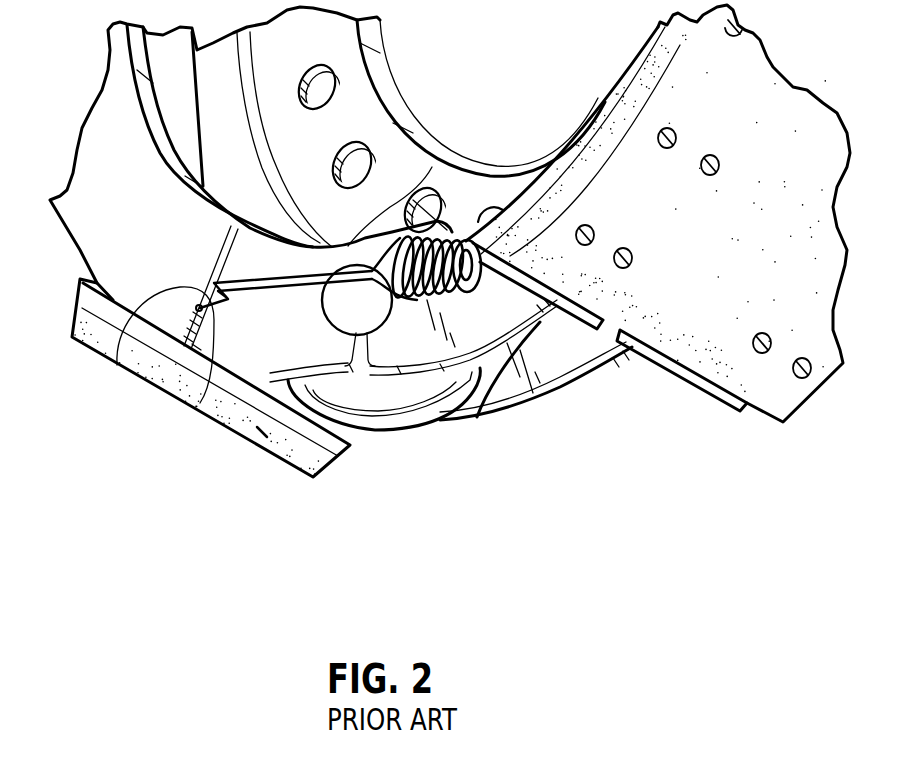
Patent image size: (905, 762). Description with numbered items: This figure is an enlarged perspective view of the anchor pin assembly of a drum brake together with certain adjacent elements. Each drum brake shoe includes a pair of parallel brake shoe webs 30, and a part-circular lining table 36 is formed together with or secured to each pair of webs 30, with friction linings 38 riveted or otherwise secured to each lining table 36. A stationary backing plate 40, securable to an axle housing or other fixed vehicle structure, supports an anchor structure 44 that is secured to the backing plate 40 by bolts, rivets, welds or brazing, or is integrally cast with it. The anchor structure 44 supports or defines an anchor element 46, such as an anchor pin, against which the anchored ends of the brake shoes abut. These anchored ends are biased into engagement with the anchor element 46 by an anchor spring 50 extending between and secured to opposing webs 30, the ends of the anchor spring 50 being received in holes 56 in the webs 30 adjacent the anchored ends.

The brake shoe web 30 is at (110, 243).
The lining table 36 is at (587, 135).
The friction lining 38 is at (660, 70).
The backing plate 40 is at (360, 115).
The anchor structure 44 is at (413, 407).
The anchor element 46 is at (432, 167).
The anchor spring 50 is at (290, 285).
The hole 56 is at (117, 363).